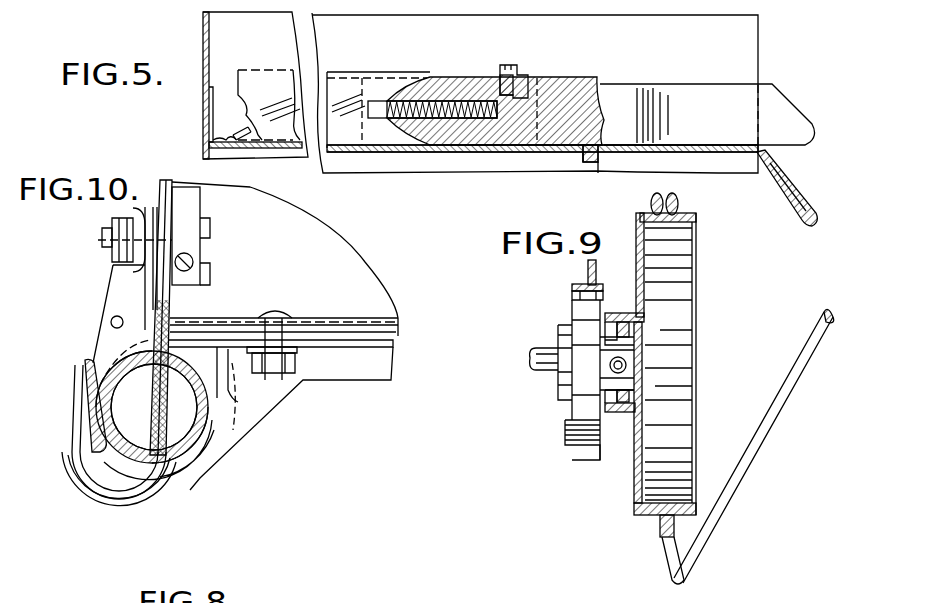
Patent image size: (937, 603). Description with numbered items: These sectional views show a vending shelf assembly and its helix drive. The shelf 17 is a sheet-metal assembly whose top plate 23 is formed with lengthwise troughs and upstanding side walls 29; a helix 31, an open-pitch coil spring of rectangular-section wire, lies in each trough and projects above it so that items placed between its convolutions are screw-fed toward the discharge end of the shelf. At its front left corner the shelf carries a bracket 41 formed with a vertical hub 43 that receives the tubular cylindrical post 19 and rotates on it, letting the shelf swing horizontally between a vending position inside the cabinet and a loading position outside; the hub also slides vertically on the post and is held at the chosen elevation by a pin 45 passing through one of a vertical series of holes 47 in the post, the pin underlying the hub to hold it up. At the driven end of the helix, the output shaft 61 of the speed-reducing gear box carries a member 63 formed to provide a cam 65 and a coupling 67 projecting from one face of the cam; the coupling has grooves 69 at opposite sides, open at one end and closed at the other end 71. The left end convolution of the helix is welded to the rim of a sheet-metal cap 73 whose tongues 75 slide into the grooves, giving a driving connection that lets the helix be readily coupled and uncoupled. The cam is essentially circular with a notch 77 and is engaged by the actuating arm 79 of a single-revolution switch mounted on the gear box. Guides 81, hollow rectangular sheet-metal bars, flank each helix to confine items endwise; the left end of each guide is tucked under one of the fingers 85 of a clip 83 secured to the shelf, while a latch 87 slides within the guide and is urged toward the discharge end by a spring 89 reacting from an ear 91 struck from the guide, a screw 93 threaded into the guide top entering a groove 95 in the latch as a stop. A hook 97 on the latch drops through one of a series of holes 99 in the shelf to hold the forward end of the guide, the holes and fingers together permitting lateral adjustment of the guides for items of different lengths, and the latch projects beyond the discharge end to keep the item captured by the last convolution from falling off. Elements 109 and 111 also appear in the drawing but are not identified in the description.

In FIG. 5, the shelf 17 is at (458, 169).
In FIG. 10, the shelf 17 is at (407, 295).
In FIG. 10, the post 19 is at (205, 437).
In FIG. 5, the top plate 23 is at (393, 154).
In FIG. 5, the side walls 29 is at (494, 18).
In FIG. 9, the helix 31 is at (726, 498).
In FIG. 10, the bracket 41 is at (358, 376).
In FIG. 10, the hub 43 is at (166, 486).
In FIG. 10, the pin 45 is at (110, 503).
In FIG. 10, the holes 47 is at (135, 442).
In FIG. 9, the output shaft 61 is at (540, 370).
In FIG. 9, the member 63 is at (559, 403).
In FIG. 9, the cam 65 is at (571, 446).
In FIG. 9, the coupling 67 is at (640, 379).
In FIG. 9, the grooves 69 is at (605, 374).
In FIG. 9, the closed end of groove 71 is at (629, 334).
In FIG. 9, the cap 73 is at (633, 509).
In FIG. 9, the tongues 75 is at (609, 315).
In FIG. 9, the notch 77 is at (572, 288).
In FIG. 9, the actuating arm 79 is at (597, 262).
In FIG. 5, the guide 81 is at (257, 71).
In FIG. 5, the clip 83 is at (206, 144).
In FIG. 10, the clip 83 is at (192, 203).
In FIG. 5, the fingers 85 is at (240, 130).
In FIG. 10, the fingers 85 is at (206, 272).
In FIG. 5, the latch 87 is at (658, 86).
In FIG. 5, the spring 89 is at (456, 96).
In FIG. 5, the ear 91 is at (364, 92).
In FIG. 5, the screw 93 is at (503, 64).
In FIG. 5, the groove 95 is at (540, 90).
In FIG. 5, the hook 97 is at (598, 164).
In FIG. 5, the holes 99 is at (577, 154).
In FIG. 5, the lever 109 is at (798, 196).
In FIG. 5, the lever edge 111 is at (780, 210).